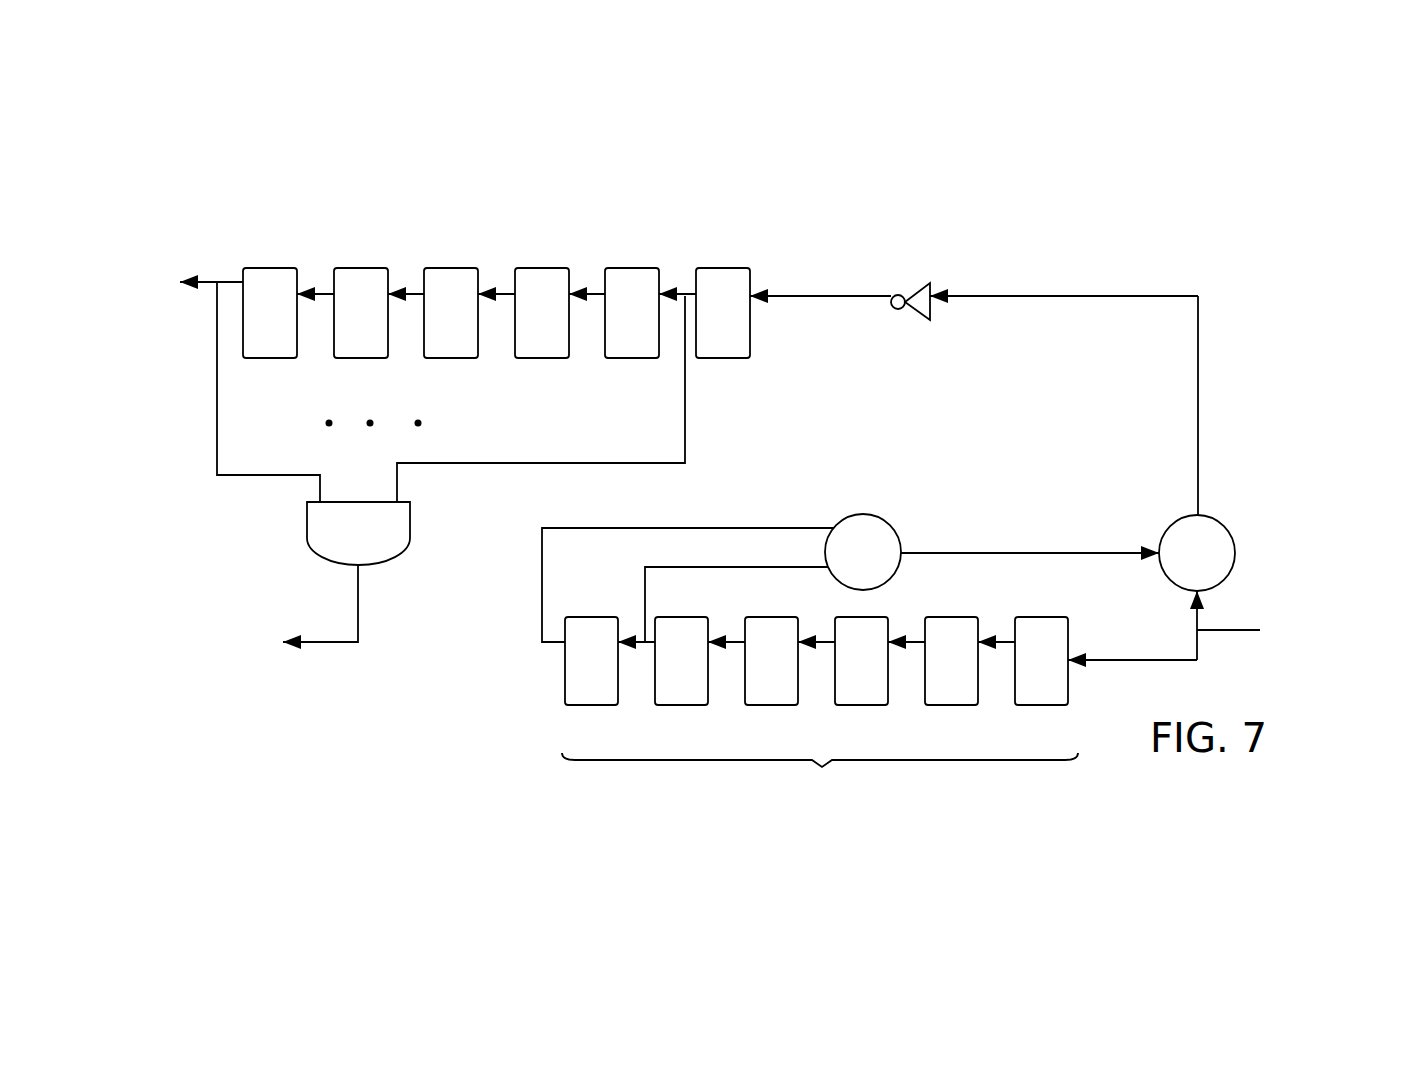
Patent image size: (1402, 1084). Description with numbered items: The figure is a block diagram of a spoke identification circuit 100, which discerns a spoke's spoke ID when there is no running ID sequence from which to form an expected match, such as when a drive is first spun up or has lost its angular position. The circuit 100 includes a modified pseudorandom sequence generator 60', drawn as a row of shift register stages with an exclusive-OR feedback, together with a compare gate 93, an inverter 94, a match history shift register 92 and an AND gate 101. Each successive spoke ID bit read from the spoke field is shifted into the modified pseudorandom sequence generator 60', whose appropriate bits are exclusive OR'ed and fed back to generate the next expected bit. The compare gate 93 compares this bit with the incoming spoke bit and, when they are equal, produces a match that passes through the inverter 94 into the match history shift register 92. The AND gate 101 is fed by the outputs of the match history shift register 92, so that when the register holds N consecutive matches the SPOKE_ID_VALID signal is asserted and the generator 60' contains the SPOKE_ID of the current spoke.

The spoke identification circuit 100 is at (285, 190).
The match history shift register 92 is at (413, 242).
The inverter 94 is at (942, 320).
The compare gate 93 is at (1173, 515).
The AND gate 101 is at (412, 513).
The modified pseudorandom sequence generator 60' is at (718, 666).